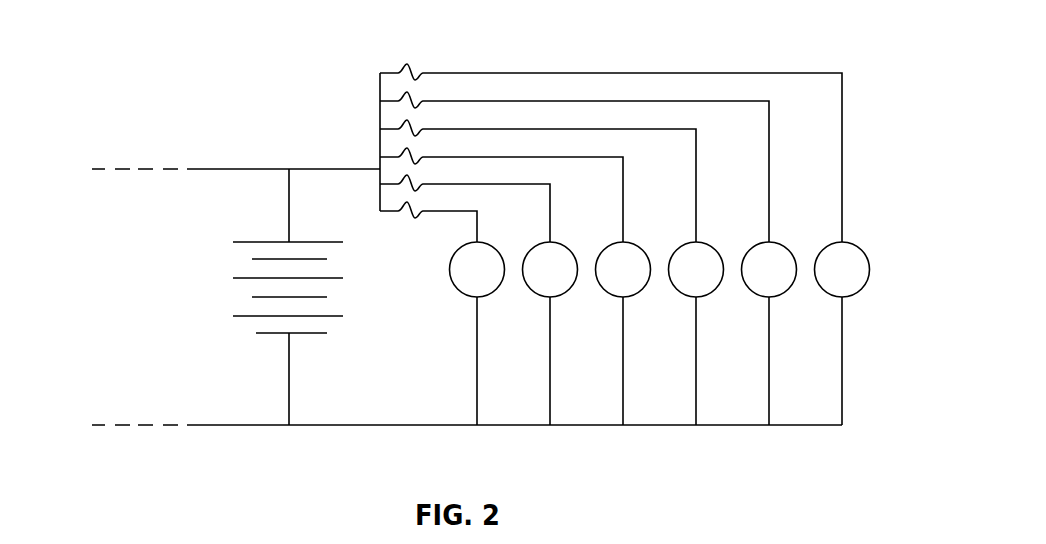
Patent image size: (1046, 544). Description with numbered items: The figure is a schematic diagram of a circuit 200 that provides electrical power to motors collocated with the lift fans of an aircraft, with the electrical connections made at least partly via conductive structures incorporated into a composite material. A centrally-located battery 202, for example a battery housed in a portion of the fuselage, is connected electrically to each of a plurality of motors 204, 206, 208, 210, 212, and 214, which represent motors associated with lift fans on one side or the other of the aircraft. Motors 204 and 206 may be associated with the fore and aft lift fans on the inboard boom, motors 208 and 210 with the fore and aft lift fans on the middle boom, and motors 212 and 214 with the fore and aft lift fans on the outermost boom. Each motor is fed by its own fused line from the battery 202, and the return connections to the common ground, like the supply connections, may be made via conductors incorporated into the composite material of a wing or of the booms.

The circuit 200 is at (155, 54).
The battery 202 is at (239, 303).
The motor 204 is at (463, 293).
The motor 206 is at (542, 295).
The motor 208 is at (614, 295).
The motor 210 is at (690, 295).
The motor 212 is at (763, 295).
The motor 214 is at (836, 295).